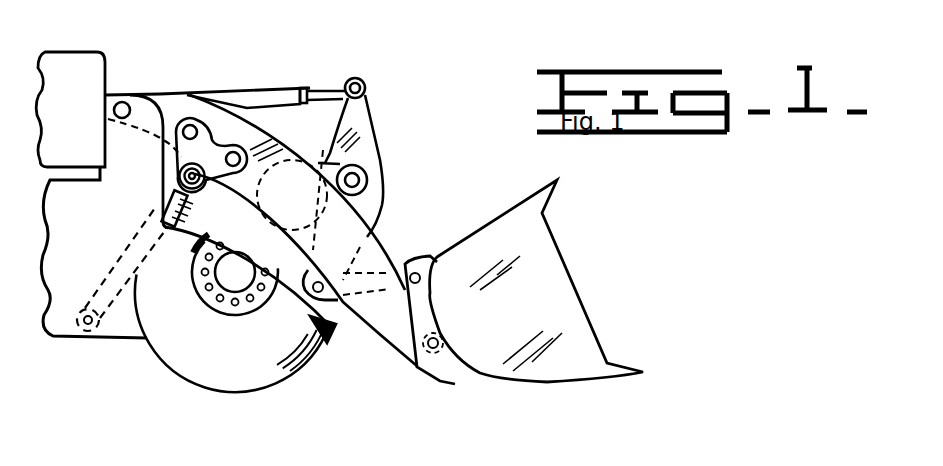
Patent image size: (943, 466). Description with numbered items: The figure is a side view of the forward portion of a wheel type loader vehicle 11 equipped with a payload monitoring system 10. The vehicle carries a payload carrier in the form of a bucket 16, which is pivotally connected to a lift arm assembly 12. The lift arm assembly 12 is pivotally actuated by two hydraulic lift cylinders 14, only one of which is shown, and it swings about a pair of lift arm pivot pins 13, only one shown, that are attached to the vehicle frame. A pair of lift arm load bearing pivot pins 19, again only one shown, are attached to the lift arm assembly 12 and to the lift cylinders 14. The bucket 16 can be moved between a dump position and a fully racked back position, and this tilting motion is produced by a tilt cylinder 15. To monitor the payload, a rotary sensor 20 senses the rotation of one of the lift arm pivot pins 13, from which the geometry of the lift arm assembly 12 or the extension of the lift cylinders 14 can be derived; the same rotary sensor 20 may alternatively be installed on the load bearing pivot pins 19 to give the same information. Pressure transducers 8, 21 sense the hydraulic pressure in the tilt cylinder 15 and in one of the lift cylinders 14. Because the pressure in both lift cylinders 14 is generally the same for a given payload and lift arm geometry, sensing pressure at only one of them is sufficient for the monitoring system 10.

The pressure transducer 8 is at (222, 93).
The payload monitoring system 10 is at (434, 73).
The wheel type loader vehicle 11 is at (70, 109).
The lift arm assembly 12 is at (181, 104).
The lift arm pivot pin 13 is at (120, 102).
The hydraulic lift cylinder 14 is at (188, 212).
The tilt cylinder 15 is at (267, 88).
The bucket 16 is at (512, 228).
The lift arm load bearing pivot pin 19 is at (178, 185).
The rotary sensor 20 is at (127, 92).
The pressure transducer 21 is at (157, 210).